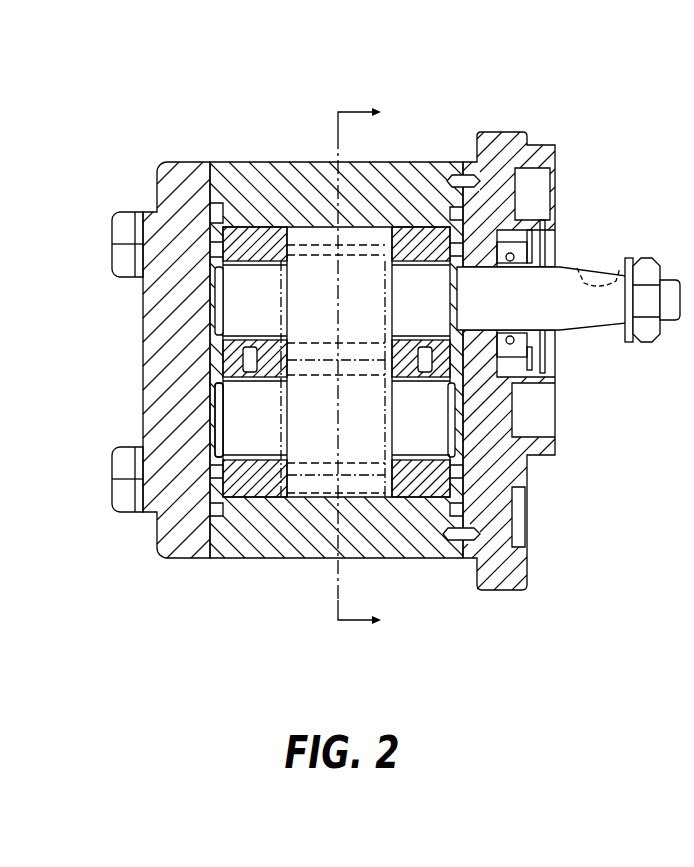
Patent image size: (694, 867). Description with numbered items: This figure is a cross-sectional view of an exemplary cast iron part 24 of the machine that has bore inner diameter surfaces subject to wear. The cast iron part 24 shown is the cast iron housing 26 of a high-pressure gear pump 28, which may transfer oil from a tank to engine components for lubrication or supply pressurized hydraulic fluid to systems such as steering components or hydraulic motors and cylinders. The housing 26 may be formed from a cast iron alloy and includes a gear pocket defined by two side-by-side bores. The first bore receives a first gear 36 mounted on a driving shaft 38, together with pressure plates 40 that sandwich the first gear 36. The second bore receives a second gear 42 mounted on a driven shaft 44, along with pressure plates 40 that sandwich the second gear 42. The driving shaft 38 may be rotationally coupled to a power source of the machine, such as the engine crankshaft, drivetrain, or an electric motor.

The cast iron part 24 is at (267, 183).
The cast iron housing 26 is at (424, 185).
The high-pressure gear pump 28 is at (390, 321).
The first gear 36 is at (348, 270).
The driving shaft 38 is at (520, 253).
The pressure plates 40 is at (236, 226).
The second gear 42 is at (310, 453).
The driven shaft 44 is at (233, 416).